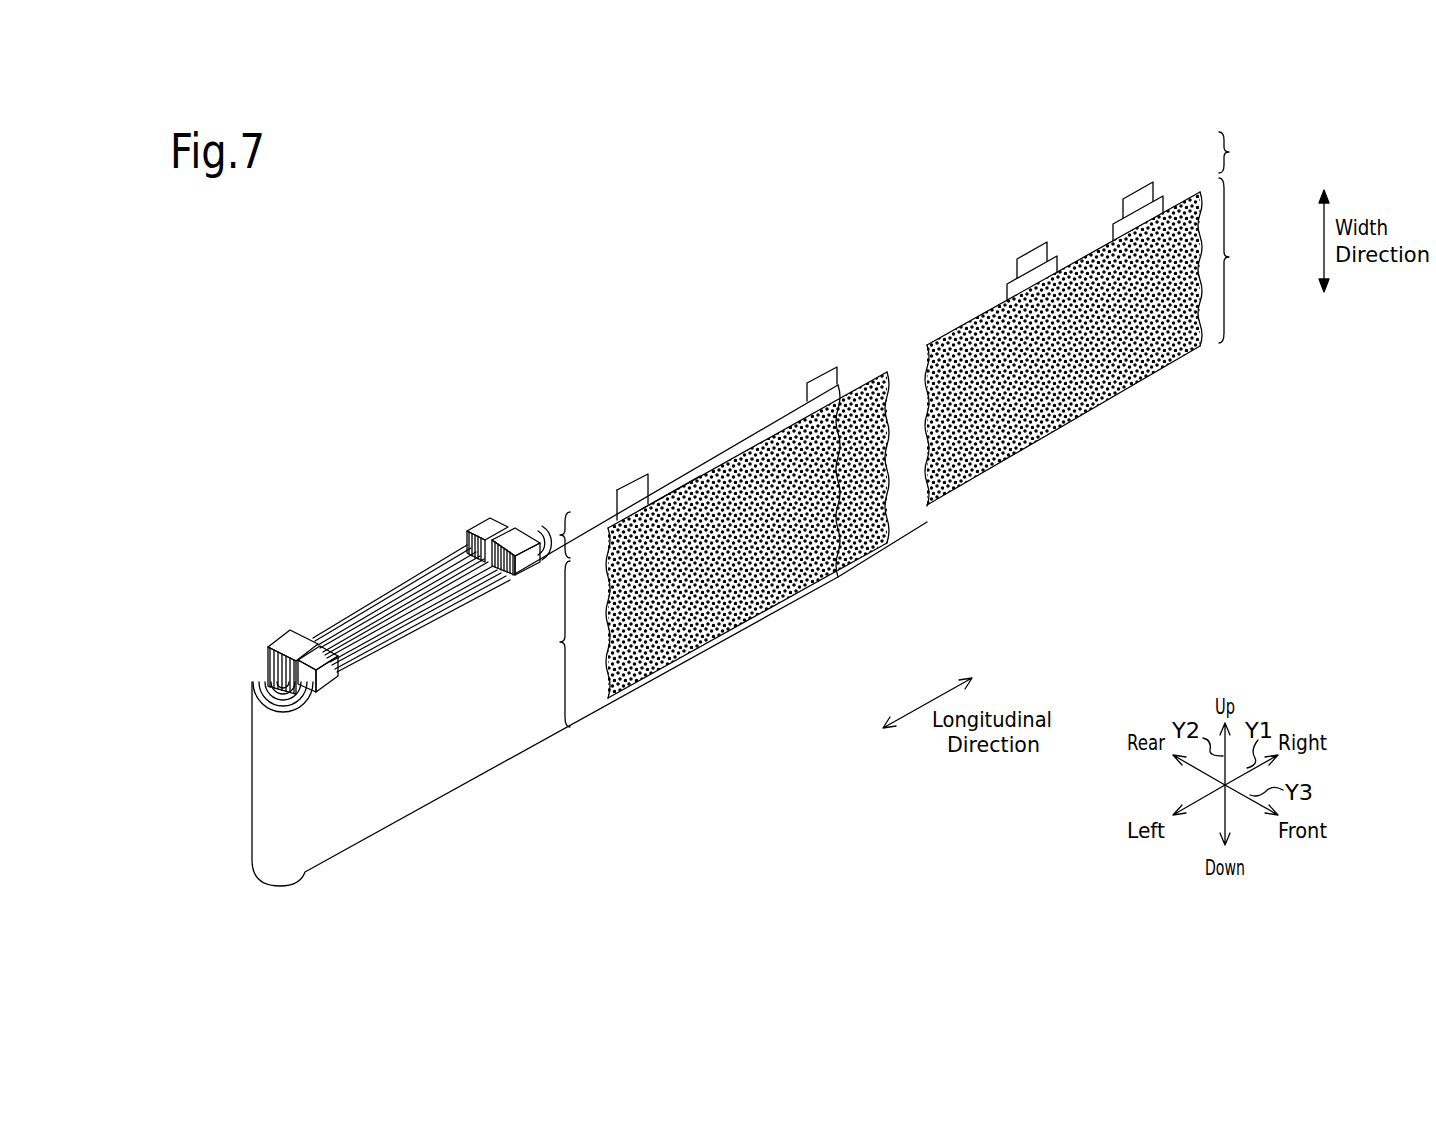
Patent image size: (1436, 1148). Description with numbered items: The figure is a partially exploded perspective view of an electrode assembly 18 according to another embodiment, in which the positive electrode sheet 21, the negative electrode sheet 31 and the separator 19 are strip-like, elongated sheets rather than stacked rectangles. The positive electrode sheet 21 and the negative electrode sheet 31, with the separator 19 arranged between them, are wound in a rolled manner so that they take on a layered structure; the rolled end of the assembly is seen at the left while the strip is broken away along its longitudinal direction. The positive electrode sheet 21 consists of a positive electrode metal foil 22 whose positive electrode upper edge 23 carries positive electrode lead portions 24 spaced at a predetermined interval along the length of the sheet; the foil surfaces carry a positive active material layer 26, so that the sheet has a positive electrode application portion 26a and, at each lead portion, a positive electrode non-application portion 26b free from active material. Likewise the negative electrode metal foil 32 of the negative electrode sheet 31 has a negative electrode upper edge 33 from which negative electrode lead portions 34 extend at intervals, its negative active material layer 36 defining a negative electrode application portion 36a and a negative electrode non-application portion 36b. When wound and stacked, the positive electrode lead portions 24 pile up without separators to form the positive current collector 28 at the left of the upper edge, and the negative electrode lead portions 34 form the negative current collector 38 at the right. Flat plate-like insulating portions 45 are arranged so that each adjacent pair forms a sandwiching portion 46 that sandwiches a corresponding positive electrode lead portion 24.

The electrode assembly 18 is at (962, 210).
The separator 19 is at (425, 792).
The positive electrode sheet 21 is at (328, 672).
The positive electrode metal foil 22 is at (977, 333).
The positive electrode upper edge 23 is at (945, 333).
The positive electrode lead portion 24 is at (830, 368).
The positive active material layer 26 is at (1097, 402).
The positive electrode application portion 26a is at (1250, 260).
The positive electrode non-application portion 26b is at (1251, 152).
The positive current collector 28 is at (234, 629).
The negative electrode sheet 31 is at (523, 562).
The negative electrode metal foil 32 is at (643, 477).
The negative electrode upper edge 33 is at (710, 470).
The negative electrode lead portion 34 is at (622, 480).
The negative active material layer 36 is at (812, 566).
The negative electrode application portion 36a is at (560, 642).
The negative electrode non-application portion 36b is at (548, 535).
The negative current collector 38 is at (517, 488).
The insulating portion 45 is at (1008, 289).
The sandwiching portion 46 is at (265, 662).